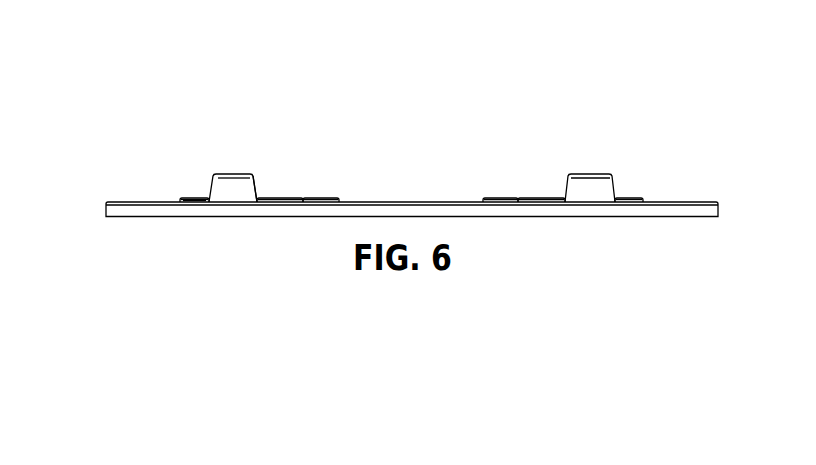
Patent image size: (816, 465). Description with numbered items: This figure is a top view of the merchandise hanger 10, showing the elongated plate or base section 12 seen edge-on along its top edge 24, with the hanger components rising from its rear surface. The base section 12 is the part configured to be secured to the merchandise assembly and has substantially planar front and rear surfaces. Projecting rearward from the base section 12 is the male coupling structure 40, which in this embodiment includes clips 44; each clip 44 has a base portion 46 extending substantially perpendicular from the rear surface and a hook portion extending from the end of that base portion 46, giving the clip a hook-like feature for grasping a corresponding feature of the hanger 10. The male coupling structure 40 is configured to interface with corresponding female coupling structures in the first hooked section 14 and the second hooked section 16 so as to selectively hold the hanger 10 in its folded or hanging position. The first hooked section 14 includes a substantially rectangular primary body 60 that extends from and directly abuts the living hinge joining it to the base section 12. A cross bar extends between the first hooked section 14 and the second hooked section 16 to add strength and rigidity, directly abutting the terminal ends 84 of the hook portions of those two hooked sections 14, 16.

The hanger 10 is at (184, 66).
The base section 12 is at (112, 209).
The first hooked section 14 is at (183, 198).
The second hooked section 16 is at (645, 198).
The top edge 24 is at (504, 210).
The male coupling structure 40 is at (627, 178).
The clip 44 is at (221, 188).
The base portion 46 is at (242, 188).
The primary body 60 is at (196, 198).
The terminal end 84 is at (320, 198).